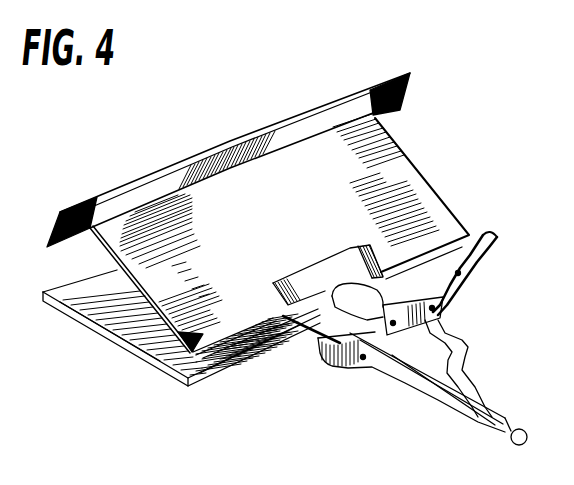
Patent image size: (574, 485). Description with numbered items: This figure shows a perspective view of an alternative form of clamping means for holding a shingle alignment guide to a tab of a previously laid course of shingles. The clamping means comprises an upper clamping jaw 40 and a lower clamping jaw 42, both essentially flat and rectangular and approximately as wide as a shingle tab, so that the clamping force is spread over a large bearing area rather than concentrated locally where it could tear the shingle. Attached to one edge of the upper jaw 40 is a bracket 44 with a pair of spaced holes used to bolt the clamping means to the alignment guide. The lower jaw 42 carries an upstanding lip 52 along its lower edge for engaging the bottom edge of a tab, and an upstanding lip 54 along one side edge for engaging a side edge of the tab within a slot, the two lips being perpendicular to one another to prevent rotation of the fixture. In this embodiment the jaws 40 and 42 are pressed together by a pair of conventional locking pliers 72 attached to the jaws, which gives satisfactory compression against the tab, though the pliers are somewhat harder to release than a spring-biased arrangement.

The upper clamping jaw 40 is at (412, 188).
The bracket 44 is at (205, 167).
The lower clamping jaw 42 is at (78, 297).
The upstanding lip 52 is at (236, 362).
The upstanding lip 54 is at (90, 332).
The locking pliers 72 is at (478, 306).